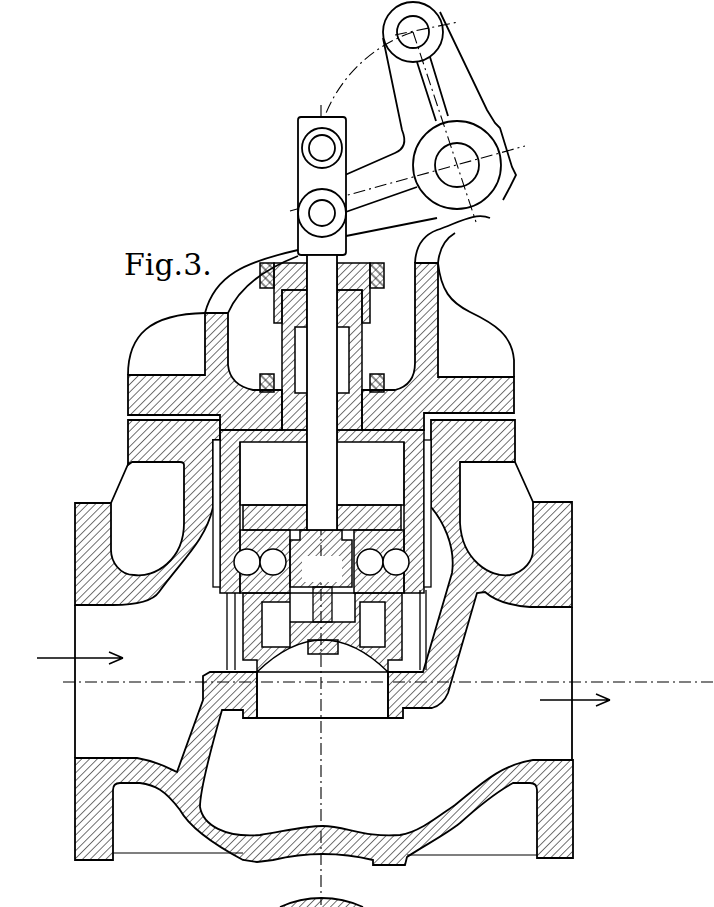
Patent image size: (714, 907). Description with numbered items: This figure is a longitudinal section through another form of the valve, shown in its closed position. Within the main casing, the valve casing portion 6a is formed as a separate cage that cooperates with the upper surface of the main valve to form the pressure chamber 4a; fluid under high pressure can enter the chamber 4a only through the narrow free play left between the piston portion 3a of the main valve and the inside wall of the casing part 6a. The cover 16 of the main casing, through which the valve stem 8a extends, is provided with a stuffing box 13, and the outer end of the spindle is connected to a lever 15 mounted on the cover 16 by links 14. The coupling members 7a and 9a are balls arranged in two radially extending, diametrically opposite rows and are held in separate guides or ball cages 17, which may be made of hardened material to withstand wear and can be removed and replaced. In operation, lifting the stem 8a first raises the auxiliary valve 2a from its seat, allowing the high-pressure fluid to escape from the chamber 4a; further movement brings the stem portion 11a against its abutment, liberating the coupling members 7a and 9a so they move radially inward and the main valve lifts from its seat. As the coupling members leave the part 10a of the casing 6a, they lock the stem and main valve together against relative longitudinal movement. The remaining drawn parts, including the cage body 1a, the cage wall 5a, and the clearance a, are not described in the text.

The lever 15 is at (463, 88).
The links 14 is at (308, 176).
The cover 16 is at (194, 390).
The stuffing box 13 is at (283, 348).
The piston portion 3a is at (400, 505).
The cage 5a is at (242, 607).
The gap a is at (217, 563).
The valve casing portion 6a is at (243, 468).
The pressure chamber 4a is at (370, 473).
The coupling members 7a is at (280, 527).
The coupling members 9a is at (222, 580).
The part of the valve casing 10a is at (405, 577).
The stem portion 11a is at (321, 558).
The valve stem 8a is at (322, 438).
The valve cage 1a is at (260, 658).
The ball cages 17 is at (242, 592).
The auxiliary valve 2a is at (330, 640).